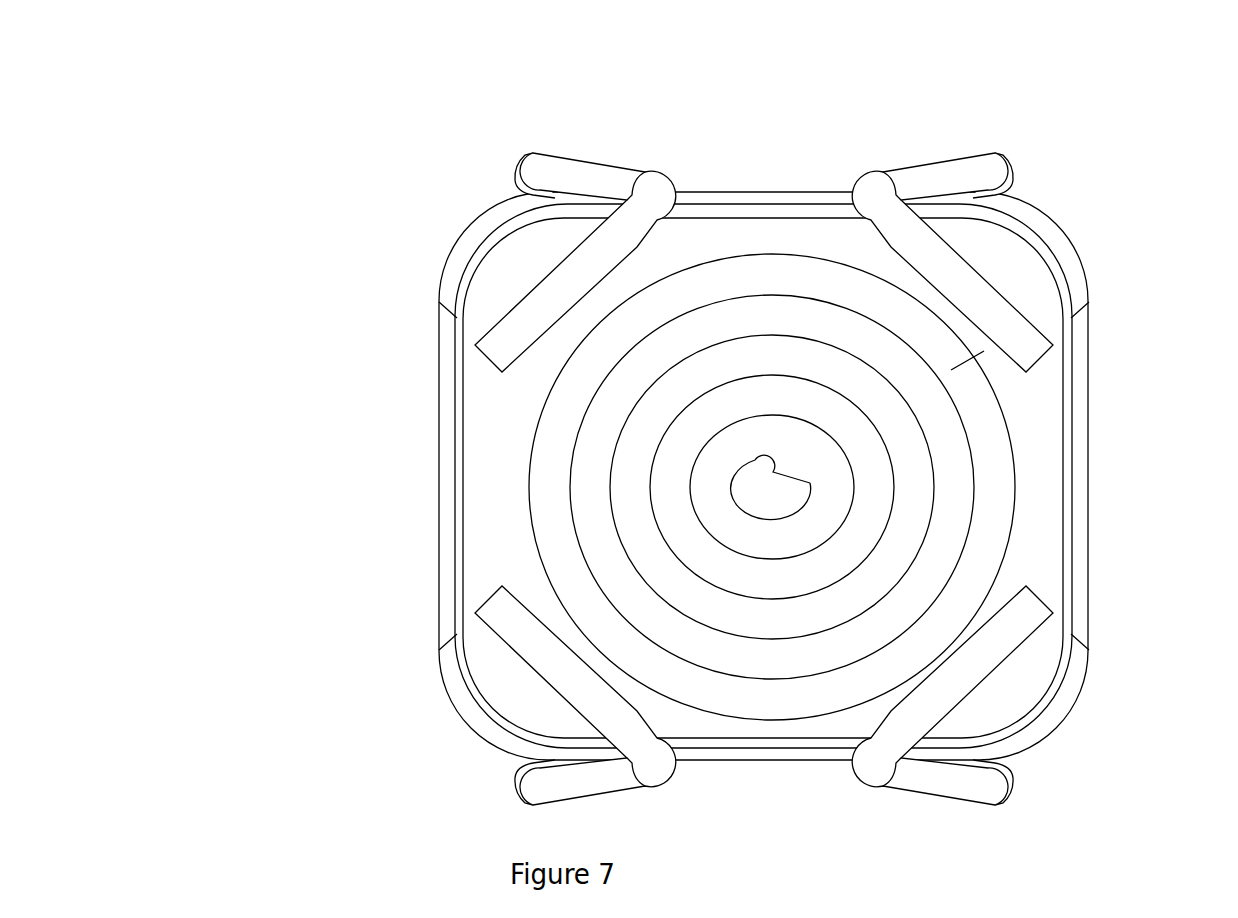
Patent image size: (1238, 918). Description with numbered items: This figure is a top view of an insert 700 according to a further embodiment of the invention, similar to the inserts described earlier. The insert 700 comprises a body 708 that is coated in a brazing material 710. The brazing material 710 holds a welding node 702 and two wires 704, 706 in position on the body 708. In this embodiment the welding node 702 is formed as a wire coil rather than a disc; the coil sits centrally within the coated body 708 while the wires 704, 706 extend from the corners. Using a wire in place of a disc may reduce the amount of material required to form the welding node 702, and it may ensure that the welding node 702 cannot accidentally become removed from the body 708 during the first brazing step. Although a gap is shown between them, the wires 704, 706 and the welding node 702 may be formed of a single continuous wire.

The insert 700 is at (106, 109).
The welding node 702 is at (756, 471).
The wire 704 is at (551, 149).
The wire 706 is at (1005, 160).
The body 708 is at (821, 243).
The brazing material 710 is at (1082, 437).